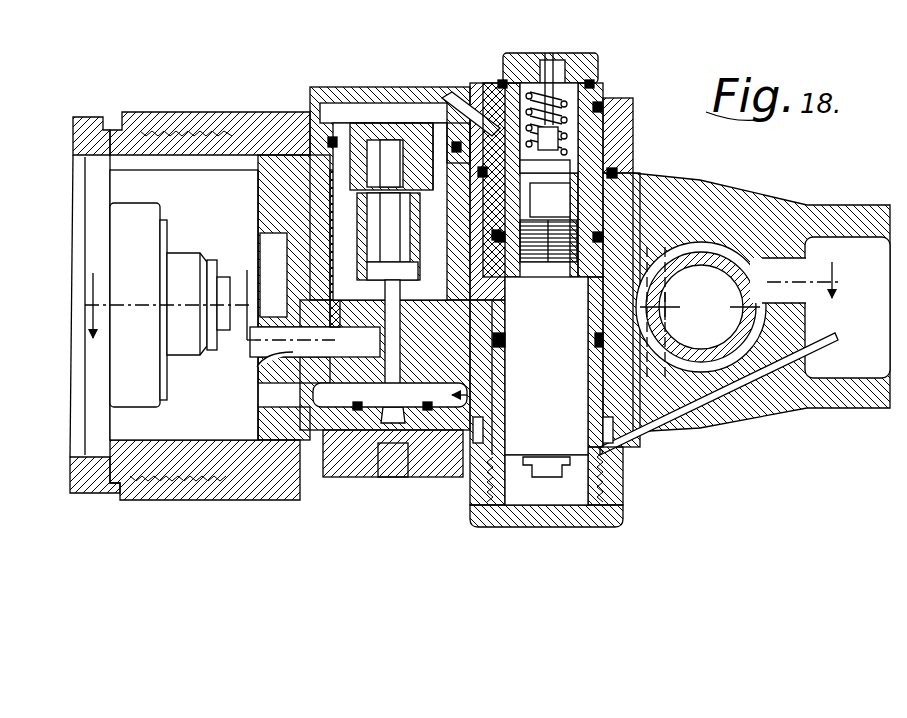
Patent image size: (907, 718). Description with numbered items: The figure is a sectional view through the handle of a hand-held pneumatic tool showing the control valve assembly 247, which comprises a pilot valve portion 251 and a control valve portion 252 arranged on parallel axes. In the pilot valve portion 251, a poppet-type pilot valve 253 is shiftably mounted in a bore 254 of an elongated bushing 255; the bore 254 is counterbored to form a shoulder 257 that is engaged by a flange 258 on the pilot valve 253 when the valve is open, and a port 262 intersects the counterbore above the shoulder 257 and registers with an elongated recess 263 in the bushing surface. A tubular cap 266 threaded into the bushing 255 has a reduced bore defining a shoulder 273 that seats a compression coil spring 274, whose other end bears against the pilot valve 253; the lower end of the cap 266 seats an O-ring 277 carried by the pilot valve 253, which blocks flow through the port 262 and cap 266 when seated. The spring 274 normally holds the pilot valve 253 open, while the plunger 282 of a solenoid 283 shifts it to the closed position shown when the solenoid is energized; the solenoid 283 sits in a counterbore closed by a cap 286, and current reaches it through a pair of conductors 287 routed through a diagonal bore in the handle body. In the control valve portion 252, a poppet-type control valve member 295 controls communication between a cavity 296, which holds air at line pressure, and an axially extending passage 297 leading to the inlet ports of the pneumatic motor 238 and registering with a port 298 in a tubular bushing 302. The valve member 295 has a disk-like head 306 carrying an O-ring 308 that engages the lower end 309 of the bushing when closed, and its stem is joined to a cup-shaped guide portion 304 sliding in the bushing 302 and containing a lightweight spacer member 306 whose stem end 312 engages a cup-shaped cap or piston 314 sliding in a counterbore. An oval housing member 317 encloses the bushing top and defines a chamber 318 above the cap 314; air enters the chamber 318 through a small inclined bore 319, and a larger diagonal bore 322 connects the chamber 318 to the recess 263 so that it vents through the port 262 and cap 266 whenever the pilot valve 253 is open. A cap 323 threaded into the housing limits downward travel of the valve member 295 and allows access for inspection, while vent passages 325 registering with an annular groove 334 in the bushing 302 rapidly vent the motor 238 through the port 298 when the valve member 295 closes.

The pneumatic motor 238 is at (100, 150).
The control valve assembly 247 is at (362, 52).
The control valve portion 252 is at (305, 118).
The chamber 318 is at (342, 92).
The cover or housing member 317 is at (352, 115).
The end of stem portion 312 is at (388, 147).
The cup-shaped cap or piston 314 is at (404, 125).
The diagonally extending bore 322 is at (457, 120).
The inclined bore 319 is at (433, 125).
The elongated recess or slot 263 is at (483, 110).
The shoulder 273 is at (545, 83).
The compression coil spring 274 is at (573, 83).
The tubular cap 266 is at (598, 62).
The pilot valve portion 251 is at (630, 98).
The O-ring 277 is at (633, 105).
The flange 258 is at (630, 130).
The shoulder 257 is at (630, 150).
The port 262 is at (637, 182).
The bore 254 is at (590, 200).
The pilot valve 253 is at (590, 240).
The bushing 255 is at (660, 242).
The conductors 287 is at (848, 332).
The plunger 282 is at (567, 277).
The annular groove 334 is at (470, 320).
The solenoid 283 is at (530, 388).
The control valve member 295 is at (470, 373).
The cavity 296 is at (564, 429).
The cap 286 is at (615, 517).
The tubular bushing 302 is at (300, 198).
The cup-shaped guide portion 304 is at (302, 230).
The head 306 is at (363, 223).
The vent passages 325 is at (293, 275).
The port 298 is at (330, 327).
The axially extending passage 297 is at (295, 352).
The lower end of bushing 309 is at (340, 394).
The O-ring 308 is at (358, 412).
The cap 323 is at (323, 478).